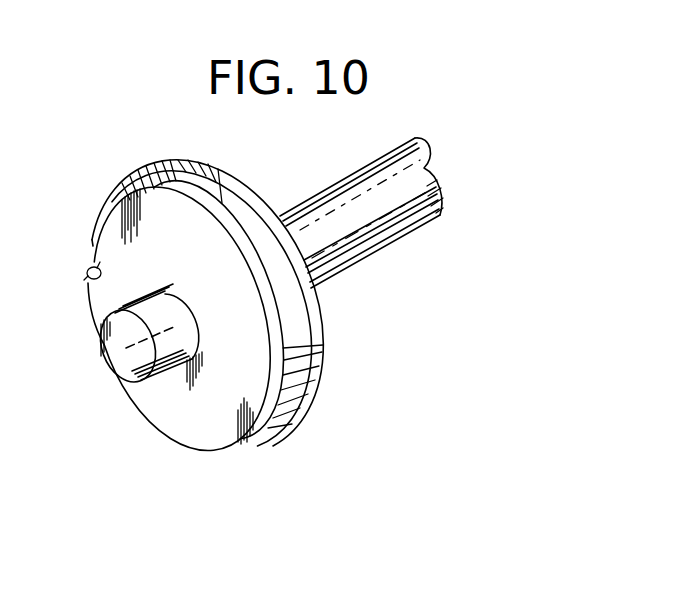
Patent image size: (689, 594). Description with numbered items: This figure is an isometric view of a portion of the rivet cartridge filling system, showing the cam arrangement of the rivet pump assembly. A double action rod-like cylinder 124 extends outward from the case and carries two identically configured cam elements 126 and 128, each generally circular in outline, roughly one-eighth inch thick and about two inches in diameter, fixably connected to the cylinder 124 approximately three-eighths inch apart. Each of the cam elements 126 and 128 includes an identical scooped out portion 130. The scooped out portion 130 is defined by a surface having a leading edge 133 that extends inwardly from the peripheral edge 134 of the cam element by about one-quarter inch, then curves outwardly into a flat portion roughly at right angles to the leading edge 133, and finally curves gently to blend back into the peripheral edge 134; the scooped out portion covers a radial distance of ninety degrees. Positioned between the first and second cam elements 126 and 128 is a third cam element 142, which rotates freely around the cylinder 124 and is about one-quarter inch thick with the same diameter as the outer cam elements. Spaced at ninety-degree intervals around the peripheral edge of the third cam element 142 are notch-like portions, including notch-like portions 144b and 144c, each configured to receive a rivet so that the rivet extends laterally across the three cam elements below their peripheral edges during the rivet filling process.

The double action rod-like cylinder 124 is at (352, 172).
The cam element 126 is at (192, 428).
The cam element 128 is at (260, 192).
The scooped out portion 130 is at (81, 243).
The leading edge 133 is at (87, 272).
The peripheral edge 134 is at (82, 305).
The third cam element 142 is at (143, 176).
The notch-like portion 144b is at (191, 182).
The notch-like portion 144c is at (323, 358).